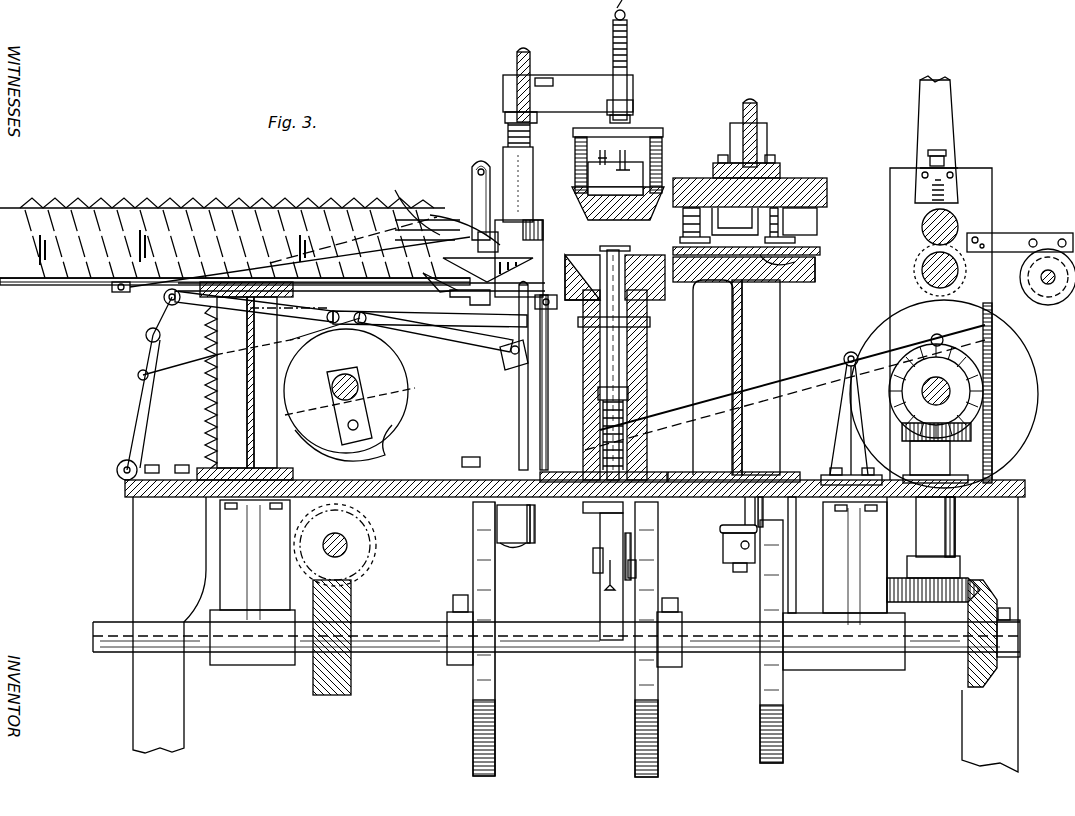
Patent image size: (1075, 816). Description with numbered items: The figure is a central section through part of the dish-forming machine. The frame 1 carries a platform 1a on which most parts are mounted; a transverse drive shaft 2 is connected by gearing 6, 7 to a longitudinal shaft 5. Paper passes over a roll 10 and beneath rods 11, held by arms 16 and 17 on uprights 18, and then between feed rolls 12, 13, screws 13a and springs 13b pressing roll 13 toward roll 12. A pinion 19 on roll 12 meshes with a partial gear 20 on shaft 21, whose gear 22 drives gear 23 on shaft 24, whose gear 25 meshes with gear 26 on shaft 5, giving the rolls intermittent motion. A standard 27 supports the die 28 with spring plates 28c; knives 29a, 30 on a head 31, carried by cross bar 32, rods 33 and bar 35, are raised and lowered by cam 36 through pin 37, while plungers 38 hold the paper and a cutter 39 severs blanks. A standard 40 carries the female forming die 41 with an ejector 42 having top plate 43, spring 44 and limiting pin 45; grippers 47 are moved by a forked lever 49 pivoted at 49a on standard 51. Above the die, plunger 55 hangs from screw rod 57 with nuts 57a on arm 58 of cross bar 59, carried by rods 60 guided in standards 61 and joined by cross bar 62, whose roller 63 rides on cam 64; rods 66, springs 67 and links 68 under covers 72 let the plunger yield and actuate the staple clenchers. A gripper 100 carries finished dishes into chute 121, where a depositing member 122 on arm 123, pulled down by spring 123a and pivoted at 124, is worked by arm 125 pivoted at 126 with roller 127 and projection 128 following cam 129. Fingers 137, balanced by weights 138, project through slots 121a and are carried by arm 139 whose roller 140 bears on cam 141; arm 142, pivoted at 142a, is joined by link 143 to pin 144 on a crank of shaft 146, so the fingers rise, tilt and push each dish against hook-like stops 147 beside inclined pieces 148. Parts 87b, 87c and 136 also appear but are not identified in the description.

The frame 1 is at (165, 540).
The platform or plate 1a is at (318, 468).
The drive shaft 2 is at (347, 545).
The shaft 5 is at (548, 618).
The gearing 6 is at (351, 605).
The gearing 7 is at (360, 560).
The roll 10 is at (1045, 290).
The rods or wires 11 is at (1035, 236).
The feed roll 12 is at (912, 272).
The feed roll 13 is at (920, 228).
The adjustable screws 13a is at (945, 150).
The springs 13b is at (948, 195).
The arms 16 is at (1020, 280).
The arms 17 is at (1003, 233).
The uprights 18 is at (940, 302).
The pinion 19 is at (943, 338).
The partial gear 20 is at (1012, 350).
The shaft 21 is at (950, 391).
The gear 22 is at (975, 405).
The gear 23 is at (992, 435).
The shaft 24 is at (955, 530).
The gear 25 is at (975, 580).
The gear 26 is at (968, 680).
The standard 27 is at (760, 325).
The die 28 is at (820, 250).
The spring actuated plates 28c is at (790, 282).
The cutting and scoring knife 29a is at (817, 225).
The cutting and scoring knife 30 is at (755, 235).
The head or block 31 is at (827, 185).
The cross bar 32 is at (757, 120).
The reciprocative rods 33 is at (733, 518).
The bar 35 is at (723, 553).
The cam 36 is at (760, 714).
The pin 37 is at (805, 563).
The spring actuated plungers 38 is at (680, 240).
The cutter or knife 39 is at (700, 168).
The standard 40 is at (647, 382).
The female forming die 41 is at (578, 255).
The ejector 42 is at (658, 272).
The top plate 43 is at (612, 244).
The spring 44 is at (598, 425).
The pin 45 is at (652, 325).
The grippers 47 is at (713, 300).
The forked lever 49 is at (825, 378).
The pivot 49a is at (850, 350).
The standard 51 is at (830, 437).
The plunger 55 is at (578, 200).
The adjustable screw rod 57 is at (633, 110).
The nuts 57a is at (627, 25).
The arm 58 is at (568, 93).
The cross bar 59 is at (530, 60).
The reciprocative rods 60 is at (503, 165).
The standards 61 is at (512, 230).
The cross bar 62 is at (536, 533).
The pin or roller 63 is at (470, 530).
The cam 64 is at (495, 590).
The rods 66 is at (593, 123).
The springs 67 is at (575, 150).
The links 68 is at (590, 168).
The covers 72 is at (615, 172).
The cam disk 87b is at (633, 722).
The cam follower 87c is at (610, 618).
The gripper 100 is at (440, 210).
The chute or receptacle 121 is at (405, 220).
The slots 121a is at (488, 270).
The dish depositing member 122 is at (435, 215).
The arm 123 is at (262, 205).
The spring 123a is at (210, 438).
The pivot 124 is at (112, 287).
The arm 125 is at (405, 312).
The pivot 126 is at (553, 335).
The roller 127 is at (165, 305).
The roller or projection 128 is at (345, 311).
The cam 129 is at (325, 352).
The pivot block 136 is at (548, 310).
The fingers 137 is at (533, 370).
The weights 138 is at (505, 372).
The arm 139 is at (425, 336).
The roller 140 is at (362, 326).
The cam 141 is at (370, 458).
The arm 142 is at (150, 350).
The pivot 142a is at (117, 473).
The link 143 is at (195, 388).
The pin 144 is at (410, 395).
The shaft 146 is at (330, 392).
The hook-like stops 147 is at (475, 230).
The inclined pieces 148 is at (452, 297).